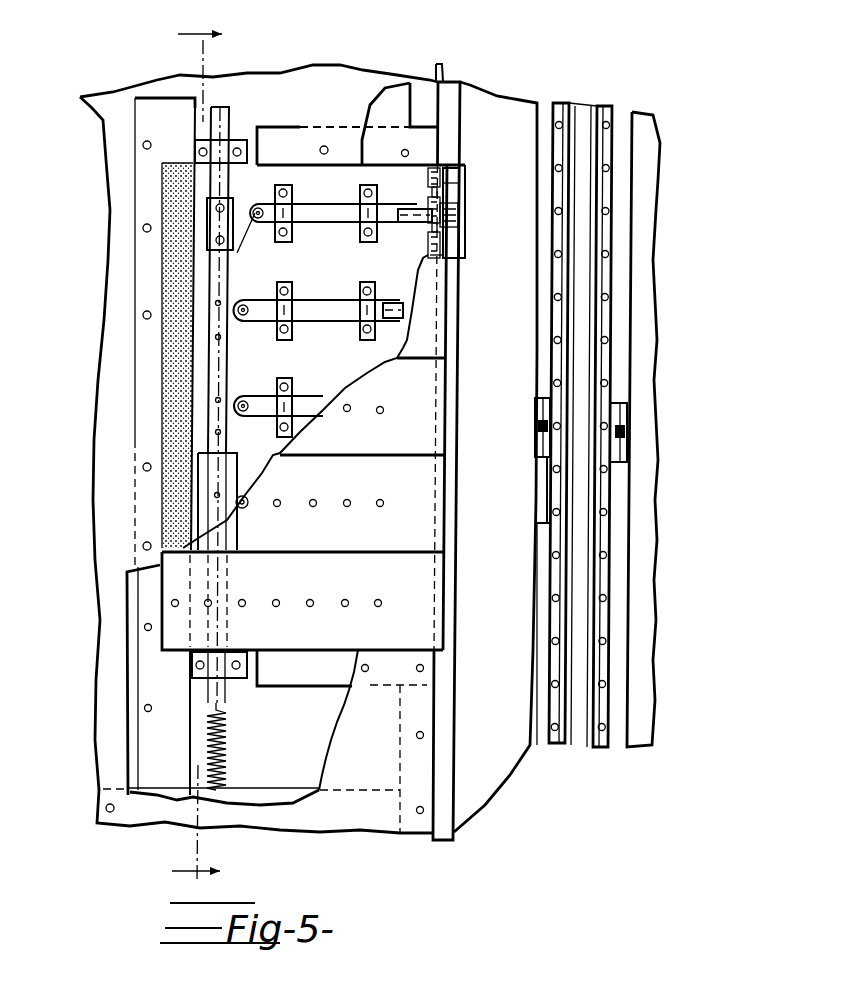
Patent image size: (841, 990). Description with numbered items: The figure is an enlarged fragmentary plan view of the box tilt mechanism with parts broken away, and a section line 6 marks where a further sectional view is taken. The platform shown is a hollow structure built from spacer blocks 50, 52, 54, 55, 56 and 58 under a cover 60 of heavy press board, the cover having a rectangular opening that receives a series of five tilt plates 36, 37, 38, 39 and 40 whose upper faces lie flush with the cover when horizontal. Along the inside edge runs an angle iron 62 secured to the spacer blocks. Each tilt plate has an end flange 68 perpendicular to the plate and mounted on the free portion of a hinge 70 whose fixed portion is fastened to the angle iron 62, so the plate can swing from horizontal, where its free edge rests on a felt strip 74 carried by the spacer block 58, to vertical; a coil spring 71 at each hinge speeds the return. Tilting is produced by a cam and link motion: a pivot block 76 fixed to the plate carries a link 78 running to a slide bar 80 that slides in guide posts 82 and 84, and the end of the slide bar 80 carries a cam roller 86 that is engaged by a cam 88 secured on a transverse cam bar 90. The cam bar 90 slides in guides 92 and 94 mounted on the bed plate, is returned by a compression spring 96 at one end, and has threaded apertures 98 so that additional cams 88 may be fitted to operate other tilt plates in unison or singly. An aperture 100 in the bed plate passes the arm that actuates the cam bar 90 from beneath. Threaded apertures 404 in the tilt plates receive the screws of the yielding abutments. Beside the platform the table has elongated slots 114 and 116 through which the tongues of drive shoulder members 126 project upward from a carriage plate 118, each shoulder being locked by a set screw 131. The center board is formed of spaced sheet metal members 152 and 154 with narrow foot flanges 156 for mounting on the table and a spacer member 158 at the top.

The section line 6- 6 is at (185, 450).
The tilt plate 36 is at (462, 188).
The tilt plate 37 is at (432, 308).
The tilt plate 38 is at (422, 418).
The tilt plate 39 is at (417, 487).
The tilt plate 40 is at (415, 587).
The spacer block 50 is at (393, 137).
The spacer block 52 is at (310, 677).
The spacer block 54 is at (397, 728).
The spacer block 55 is at (425, 95).
The spacer block 56 is at (255, 795).
The spacer block 58 is at (158, 110).
The cover 60 is at (262, 77).
The angle iron 62 is at (447, 88).
The end flange 68 is at (452, 177).
The hinge 70 is at (412, 272).
The coil spring 71 is at (427, 187).
The felt strip 74 is at (160, 268).
The pivot block 76 is at (453, 223).
The link 78 is at (420, 223).
The slide bar 80 is at (330, 217).
The guide post 82 is at (360, 242).
The guide post 84 is at (292, 232).
The cam roller 86 is at (246, 207).
The cam 88 is at (241, 232).
The cam bar 90 is at (220, 277).
The guide 92 is at (233, 147).
The guide 94 is at (232, 678).
The compression spring 96 is at (227, 740).
The threaded aperture 98 is at (221, 310).
The aperture 100 is at (233, 467).
The elongated slot 114 is at (535, 538).
The elongated slot 116 is at (618, 548).
The carriage plate 118 is at (540, 502).
The drive shoulder member 126 is at (538, 397).
The set screw 131 is at (542, 425).
The sheet metal member 152 is at (569, 192).
The sheet metal member 154 is at (600, 227).
The foot flange 156 is at (560, 222).
The spacer member 158 is at (588, 110).
The threaded aperture 404 is at (381, 414).